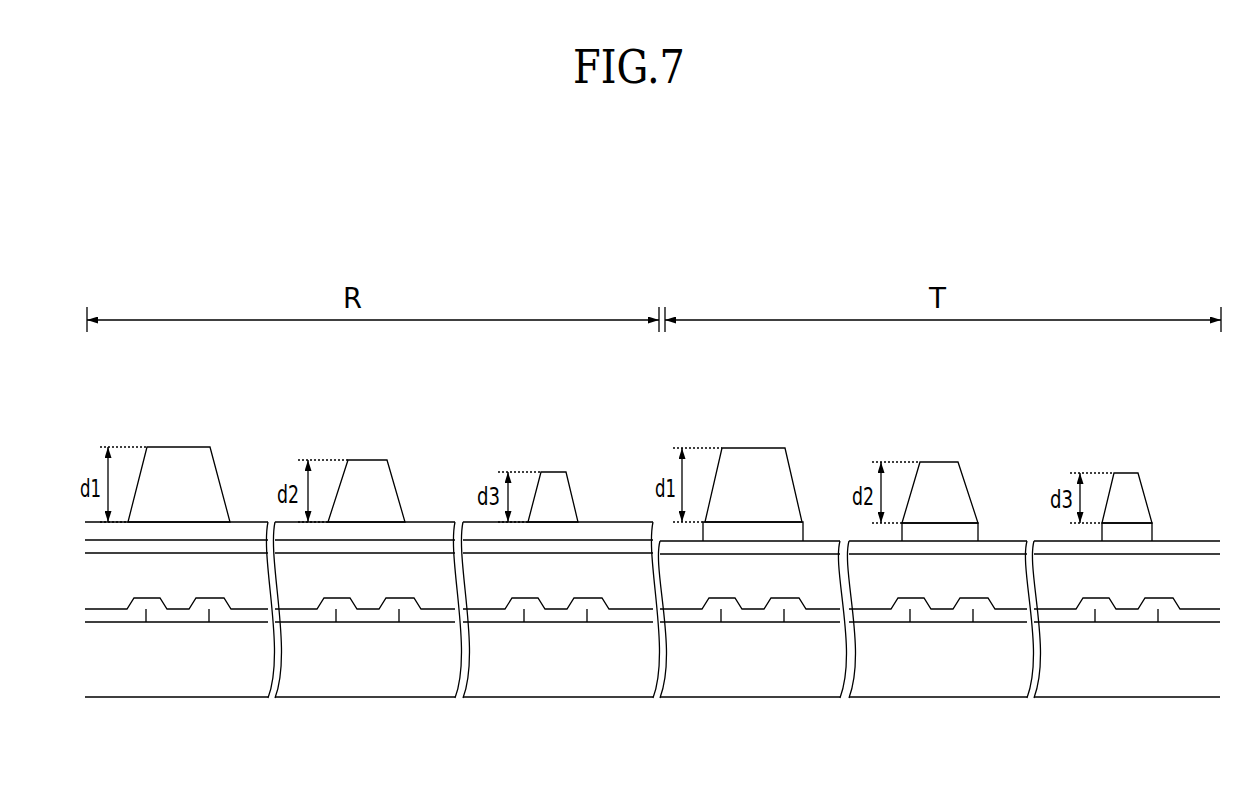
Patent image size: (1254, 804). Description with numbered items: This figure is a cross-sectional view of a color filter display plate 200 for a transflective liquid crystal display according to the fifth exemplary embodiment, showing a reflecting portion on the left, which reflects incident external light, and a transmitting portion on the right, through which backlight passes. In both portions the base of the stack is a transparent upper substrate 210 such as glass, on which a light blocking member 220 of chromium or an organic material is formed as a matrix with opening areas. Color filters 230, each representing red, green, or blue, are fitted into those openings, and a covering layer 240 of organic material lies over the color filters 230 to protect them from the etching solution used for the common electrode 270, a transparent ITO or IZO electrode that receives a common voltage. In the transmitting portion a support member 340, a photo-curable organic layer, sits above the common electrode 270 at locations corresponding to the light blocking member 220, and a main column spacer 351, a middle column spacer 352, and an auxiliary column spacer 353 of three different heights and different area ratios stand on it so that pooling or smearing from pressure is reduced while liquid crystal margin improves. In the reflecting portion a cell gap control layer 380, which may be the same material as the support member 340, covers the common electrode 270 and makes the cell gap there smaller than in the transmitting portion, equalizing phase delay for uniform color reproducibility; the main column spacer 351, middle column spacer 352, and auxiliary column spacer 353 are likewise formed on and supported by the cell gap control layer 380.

The color filter display plate 200 is at (1154, 397).
The upper substrate 210 is at (238, 670).
The light blocking member 220 is at (178, 613).
The color filter 230 is at (428, 617).
The covering layer 240 is at (492, 572).
The common electrode 270 is at (623, 547).
The support member 340 is at (773, 533).
The main column spacer 351 is at (175, 463).
The middle column spacer 352 is at (365, 475).
The auxiliary column spacer 353 is at (553, 483).
The cell gap control layer 380 is at (200, 532).